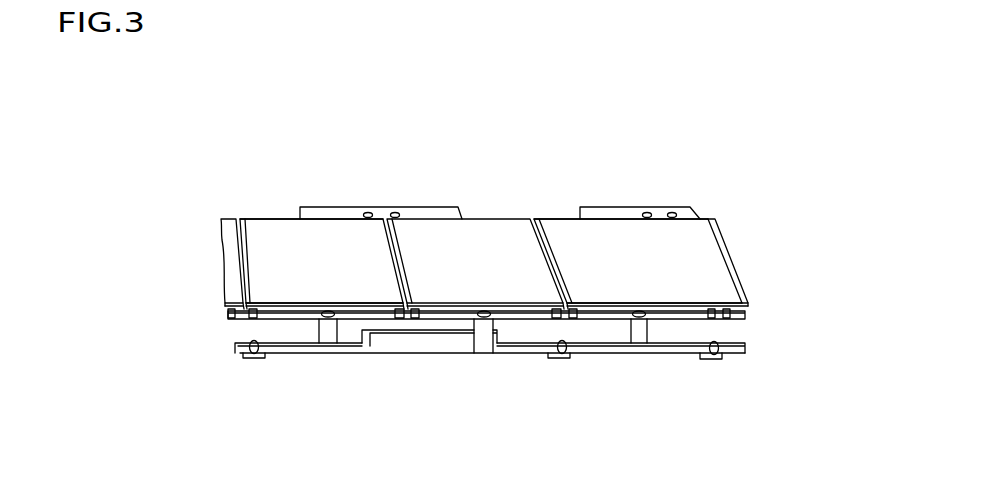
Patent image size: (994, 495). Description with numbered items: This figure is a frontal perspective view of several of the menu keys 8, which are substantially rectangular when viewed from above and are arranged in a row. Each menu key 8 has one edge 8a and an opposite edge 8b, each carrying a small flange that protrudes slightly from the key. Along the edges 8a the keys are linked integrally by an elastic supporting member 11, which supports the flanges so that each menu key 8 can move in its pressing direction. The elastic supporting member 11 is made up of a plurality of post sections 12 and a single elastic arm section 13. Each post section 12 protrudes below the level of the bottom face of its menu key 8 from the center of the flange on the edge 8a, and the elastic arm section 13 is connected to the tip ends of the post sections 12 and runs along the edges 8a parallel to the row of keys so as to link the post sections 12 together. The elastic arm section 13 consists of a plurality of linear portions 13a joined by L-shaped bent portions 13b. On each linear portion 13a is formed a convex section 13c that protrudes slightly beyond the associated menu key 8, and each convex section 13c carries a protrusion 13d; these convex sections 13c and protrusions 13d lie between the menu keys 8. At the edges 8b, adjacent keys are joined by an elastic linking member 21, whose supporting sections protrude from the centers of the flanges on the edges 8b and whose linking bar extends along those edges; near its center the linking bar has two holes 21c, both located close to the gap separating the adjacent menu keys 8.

The menu key 8 is at (567, 245).
The edge of menu key 8a is at (271, 304).
The edge of menu key 8b is at (272, 219).
The elastic supporting member 11 is at (752, 363).
The post section 12 is at (328, 325).
The elastic arm section 13 is at (290, 358).
The linear portion 13a is at (433, 347).
The L-shaped bent portion 13b is at (376, 348).
The convex section 13c is at (242, 361).
The protrusion 13d is at (256, 356).
The elastic linking member 21 is at (324, 208).
The hole 21c is at (368, 212).